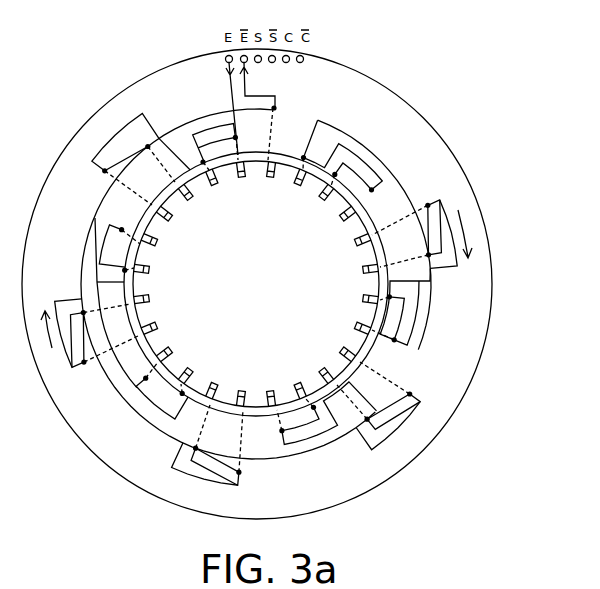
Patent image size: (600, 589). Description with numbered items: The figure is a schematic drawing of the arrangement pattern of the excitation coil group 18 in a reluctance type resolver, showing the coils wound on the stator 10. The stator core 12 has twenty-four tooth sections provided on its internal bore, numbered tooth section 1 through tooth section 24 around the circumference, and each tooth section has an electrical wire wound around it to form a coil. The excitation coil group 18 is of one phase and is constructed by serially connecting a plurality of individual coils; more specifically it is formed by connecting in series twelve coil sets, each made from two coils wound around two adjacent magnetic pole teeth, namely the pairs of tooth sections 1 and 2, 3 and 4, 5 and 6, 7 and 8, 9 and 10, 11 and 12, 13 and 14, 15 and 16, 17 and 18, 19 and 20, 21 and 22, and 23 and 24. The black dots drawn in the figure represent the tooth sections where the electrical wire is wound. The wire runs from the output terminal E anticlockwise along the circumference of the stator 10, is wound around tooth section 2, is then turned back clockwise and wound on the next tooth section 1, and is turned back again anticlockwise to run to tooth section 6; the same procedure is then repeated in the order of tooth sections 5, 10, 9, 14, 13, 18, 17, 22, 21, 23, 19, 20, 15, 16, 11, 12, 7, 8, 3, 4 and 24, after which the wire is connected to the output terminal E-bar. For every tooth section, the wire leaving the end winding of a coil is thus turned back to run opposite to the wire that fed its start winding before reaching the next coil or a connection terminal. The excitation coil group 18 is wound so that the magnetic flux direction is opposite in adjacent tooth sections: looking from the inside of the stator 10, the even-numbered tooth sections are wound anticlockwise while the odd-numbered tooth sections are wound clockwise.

The stator 10 is at (438, 37).
The stator core 12 is at (493, 117).
The excitation coil group 18 is at (533, 290).
The tooth section No. 1 is at (241, 178).
The tooth section No. 2 is at (214, 185).
The tooth section No. 3 is at (189, 199).
The tooth section No. 4 is at (169, 219).
The tooth section No. 5 is at (155, 244).
The tooth section No. 6 is at (149, 271).
The tooth section No. 7 is at (149, 297).
The tooth section No. 8 is at (155, 324).
The tooth section No. 9 is at (169, 349).
The tooth section No. 11 is at (216, 383).
The tooth section No. 13 is at (268, 389).
The tooth section No. 14 is at (295, 383).
The tooth section No. 15 is at (320, 369).
The tooth section No. 16 is at (340, 349).
The tooth section No. 17 is at (354, 324).
The tooth section No. 19 is at (362, 271).
The tooth section No. 20 is at (354, 244).
The tooth section No. 21 is at (340, 219).
The tooth section No. 22 is at (320, 199).
The tooth section No. 23 is at (295, 185).
The tooth section No. 24 is at (268, 178).